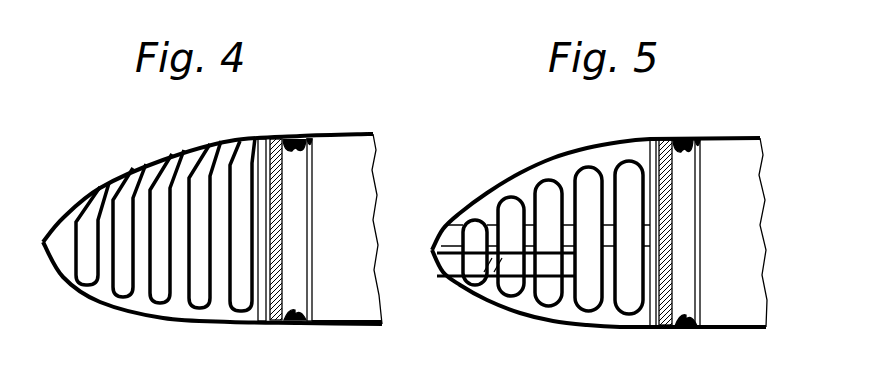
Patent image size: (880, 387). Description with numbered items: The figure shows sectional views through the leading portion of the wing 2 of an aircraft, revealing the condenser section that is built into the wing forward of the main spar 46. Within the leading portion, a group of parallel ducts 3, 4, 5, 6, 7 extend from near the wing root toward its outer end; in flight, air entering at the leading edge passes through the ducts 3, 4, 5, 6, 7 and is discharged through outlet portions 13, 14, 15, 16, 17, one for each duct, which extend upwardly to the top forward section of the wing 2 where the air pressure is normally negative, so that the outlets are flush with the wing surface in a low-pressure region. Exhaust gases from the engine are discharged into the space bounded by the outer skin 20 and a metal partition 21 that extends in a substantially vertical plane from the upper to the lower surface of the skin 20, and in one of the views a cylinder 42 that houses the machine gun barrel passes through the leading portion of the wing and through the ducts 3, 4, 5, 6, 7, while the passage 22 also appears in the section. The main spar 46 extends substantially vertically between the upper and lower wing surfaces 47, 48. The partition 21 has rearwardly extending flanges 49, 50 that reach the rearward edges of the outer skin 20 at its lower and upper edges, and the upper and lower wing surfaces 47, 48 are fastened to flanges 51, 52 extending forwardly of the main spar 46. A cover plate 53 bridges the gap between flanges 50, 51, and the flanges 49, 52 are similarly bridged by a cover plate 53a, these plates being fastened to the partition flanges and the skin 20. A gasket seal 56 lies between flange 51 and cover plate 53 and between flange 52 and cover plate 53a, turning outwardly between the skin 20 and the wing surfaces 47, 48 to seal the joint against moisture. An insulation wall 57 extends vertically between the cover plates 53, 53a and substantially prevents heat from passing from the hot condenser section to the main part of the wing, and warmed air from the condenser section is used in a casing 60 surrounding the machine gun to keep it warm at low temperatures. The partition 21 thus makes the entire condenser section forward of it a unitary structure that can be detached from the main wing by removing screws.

In FIG. 4, the wing 2 is at (102, 314).
In FIG. 5, the wing 2 is at (594, 330).
In FIG. 4, the duct 3 is at (92, 234).
In FIG. 5, the duct 3 is at (475, 252).
In FIG. 4, the duct 4 is at (129, 230).
In FIG. 5, the duct 4 is at (511, 246).
In FIG. 4, the duct 5 is at (167, 226).
In FIG. 5, the duct 5 is at (548, 243).
In FIG. 4, the duct 6 is at (205, 224).
In FIG. 5, the duct 6 is at (588, 239).
In FIG. 4, the duct 7 is at (242, 224).
In FIG. 5, the duct 7 is at (629, 237).
In FIG. 4, the outlet portion 13 is at (99, 186).
In FIG. 5, the outlet portion 13 is at (482, 207).
In FIG. 4, the outlet portion 14 is at (134, 166).
In FIG. 5, the outlet portion 14 is at (520, 190).
In FIG. 4, the outlet portion 15 is at (174, 153).
In FIG. 5, the outlet portion 15 is at (555, 175).
In FIG. 4, the outlet portion 16 is at (215, 141).
In FIG. 5, the outlet portion 16 is at (597, 162).
In FIG. 4, the outlet portion 17 is at (250, 136).
In FIG. 5, the outlet portion 17 is at (637, 157).
In FIG. 4, the outer skin 20 is at (83, 300).
In FIG. 5, the outer skin 20 is at (476, 300).
In FIG. 4, the metal partition 21 is at (262, 300).
In FIG. 5, the metal partition 21 is at (650, 306).
In FIG. 4, the lower passage 22 is at (163, 304).
In FIG. 5, the lower passage 22 is at (537, 305).
In FIG. 5, the cylinder 42 is at (455, 232).
In FIG. 4, the main spar 46 is at (313, 206).
In FIG. 5, the main spar 46 is at (702, 196).
In FIG. 4, the upper wing surface 47 is at (366, 133).
In FIG. 5, the upper wing surface 47 is at (722, 138).
In FIG. 4, the lower wing surface 48 is at (366, 326).
In FIG. 5, the lower wing surface 48 is at (747, 329).
In FIG. 4, the flange 49 is at (272, 322).
In FIG. 5, the flange 49 is at (665, 326).
In FIG. 4, the flange 50 is at (273, 139).
In FIG. 5, the flange 50 is at (655, 139).
In FIG. 4, the flange 51 is at (313, 151).
In FIG. 5, the flange 51 is at (694, 139).
In FIG. 4, the flange 52 is at (298, 311).
In FIG. 5, the flange 52 is at (693, 332).
In FIG. 4, the cover plate 53 is at (290, 152).
In FIG. 5, the cover plate 53 is at (684, 169).
In FIG. 4, the cover plate 53a is at (283, 322).
In FIG. 5, the cover plate 53a is at (690, 314).
In FIG. 4, the gasket seal 56 is at (287, 140).
In FIG. 5, the gasket seal 56 is at (676, 141).
In FIG. 4, the insulation wall 57 is at (283, 241).
In FIG. 5, the insulation wall 57 is at (665, 238).
In FIG. 5, the casing 60 is at (709, 212).